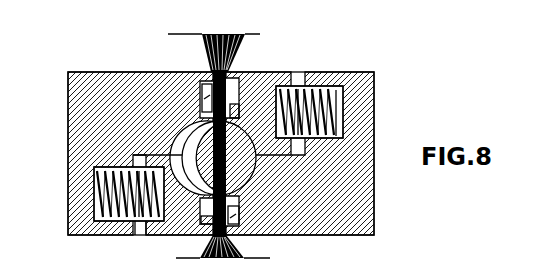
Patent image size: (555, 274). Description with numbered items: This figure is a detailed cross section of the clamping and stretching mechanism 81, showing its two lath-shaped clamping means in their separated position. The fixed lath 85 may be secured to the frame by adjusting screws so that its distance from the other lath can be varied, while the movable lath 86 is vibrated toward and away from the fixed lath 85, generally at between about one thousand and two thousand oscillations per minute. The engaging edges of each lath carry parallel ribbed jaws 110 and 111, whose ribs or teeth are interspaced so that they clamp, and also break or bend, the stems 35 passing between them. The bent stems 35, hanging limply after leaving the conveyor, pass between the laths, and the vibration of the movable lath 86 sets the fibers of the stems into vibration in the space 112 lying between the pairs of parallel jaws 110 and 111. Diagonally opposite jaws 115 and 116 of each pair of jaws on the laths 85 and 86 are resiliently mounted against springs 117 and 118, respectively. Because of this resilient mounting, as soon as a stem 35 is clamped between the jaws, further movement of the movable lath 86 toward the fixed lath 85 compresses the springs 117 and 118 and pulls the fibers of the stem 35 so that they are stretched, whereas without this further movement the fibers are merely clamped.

The clamping and stretching mechanism 81 is at (51, 193).
The fixed lath 85 is at (102, 70).
The movable lath 86 is at (293, 222).
The stems 35 is at (221, 150).
The ribbed jaw 110 is at (197, 224).
The ribbed jaw 111 is at (215, 74).
The space 112 is at (169, 130).
The resiliently mounted jaw 115 is at (162, 224).
The resiliently mounted jaw 116 is at (257, 66).
The spring 117 is at (128, 214).
The spring 118 is at (285, 80).